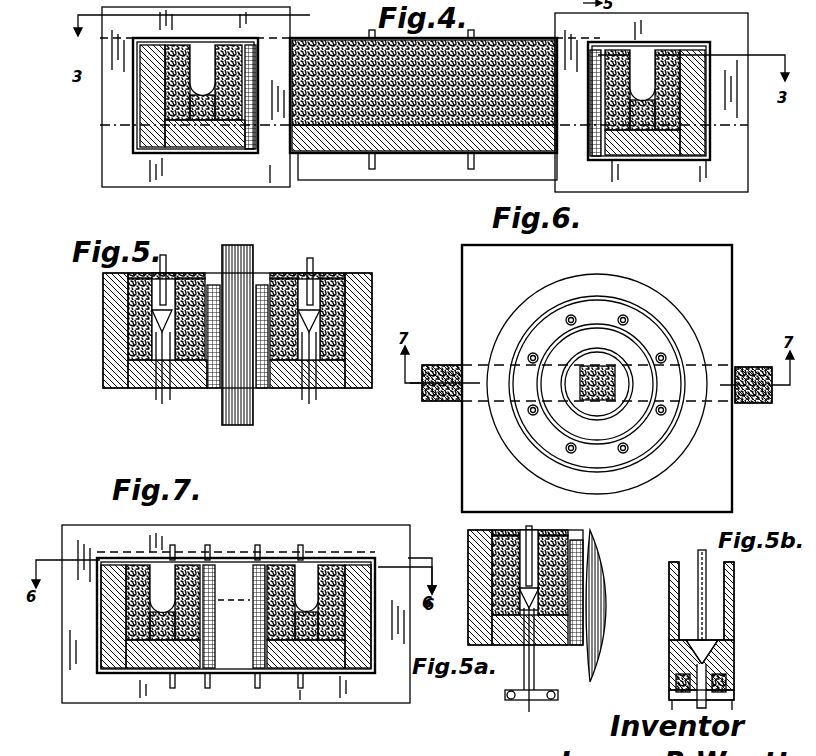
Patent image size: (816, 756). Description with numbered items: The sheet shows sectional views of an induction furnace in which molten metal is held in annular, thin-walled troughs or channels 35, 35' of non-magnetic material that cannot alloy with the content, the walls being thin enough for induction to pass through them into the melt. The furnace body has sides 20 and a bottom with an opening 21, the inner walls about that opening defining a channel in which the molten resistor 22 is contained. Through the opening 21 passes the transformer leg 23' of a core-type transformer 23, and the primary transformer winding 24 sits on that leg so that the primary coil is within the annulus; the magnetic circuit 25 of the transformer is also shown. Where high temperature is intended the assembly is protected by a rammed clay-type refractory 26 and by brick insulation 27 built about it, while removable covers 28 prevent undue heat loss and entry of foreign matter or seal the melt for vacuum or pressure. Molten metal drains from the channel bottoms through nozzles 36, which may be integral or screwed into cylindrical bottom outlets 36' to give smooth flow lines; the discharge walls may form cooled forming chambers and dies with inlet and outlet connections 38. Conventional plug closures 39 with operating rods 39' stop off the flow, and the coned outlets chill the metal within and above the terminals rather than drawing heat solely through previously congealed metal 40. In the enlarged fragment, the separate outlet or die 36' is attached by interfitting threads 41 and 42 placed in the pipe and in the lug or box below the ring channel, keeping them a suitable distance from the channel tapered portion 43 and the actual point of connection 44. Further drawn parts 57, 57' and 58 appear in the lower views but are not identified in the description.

In FIG. 4, the sides 20 is at (215, 75).
In FIG. 5, the sides 20 is at (345, 296).
In FIG. 6, the sides 20 is at (704, 430).
In FIG. 7, the sides 20 is at (100, 560).
In FIG. 5A, the sides 20 is at (525, 587).
In FIG. 5B, the sides 20 is at (736, 582).
In FIG. 4, the opening 21 is at (226, 160).
In FIG. 5, the opening 21 is at (226, 250).
In FIG. 6, the opening 21 is at (598, 360).
In FIG. 7, the opening 21 is at (248, 562).
In FIG. 5A, the opening 21 is at (602, 600).
In FIG. 6, the molten resistor 22 is at (522, 356).
In FIG. 4, the transformer 23 is at (141, 195).
In FIG. 5, the transformer 23 is at (209, 414).
In FIG. 6, the transformer 23 is at (596, 369).
In FIG. 7, the transformer 23 is at (216, 670).
In FIG. 5A, the transformer 23 is at (613, 625).
In FIG. 4, the transformer leg 23' is at (426, 187).
In FIG. 6, the transformer leg 23' is at (541, 447).
In FIG. 4, the primary transformer winding 24 is at (249, 156).
In FIG. 5, the primary transformer winding 24 is at (212, 392).
In FIG. 6, the primary transformer winding 24 is at (586, 370).
In FIG. 7, the primary transformer winding 24 is at (212, 562).
In FIG. 5A, the primary transformer winding 24 is at (580, 560).
In FIG. 4, the magnetic circuit 25 is at (118, 95).
In FIG. 6, the magnetic circuit 25 is at (430, 402).
In FIG. 7, the magnetic circuit 25 is at (66, 616).
In FIG. 5A, the magnetic circuit 25 is at (470, 545).
In FIG. 4, the refractory 26 is at (165, 125).
In FIG. 5, the refractory 26 is at (112, 378).
In FIG. 6, the refractory 26 is at (698, 362).
In FIG. 7, the refractory 26 is at (126, 640).
In FIG. 5A, the refractory 26 is at (494, 590).
In FIG. 4, the insulation 27 is at (163, 156).
In FIG. 5, the insulation 27 is at (118, 394).
In FIG. 6, the insulation 27 is at (722, 480).
In FIG. 7, the insulation 27 is at (110, 672).
In FIG. 5A, the insulation 27 is at (510, 630).
In FIG. 5, the covers 28 is at (358, 276).
In FIG. 7, the covers 28 is at (368, 560).
In FIG. 5A, the covers 28 is at (515, 530).
In FIG. 4, the annular trough 35 is at (420, 100).
In FIG. 5, the annular trough 35' is at (211, 330).
In FIG. 6, the annular trough 35' is at (471, 433).
In FIG. 7, the annular trough 35' is at (235, 634).
In FIG. 5A, the annular trough 35' is at (525, 618).
In FIG. 5B, the annular trough 35' is at (674, 556).
In FIG. 5, the nozzle 36 is at (220, 348).
In FIG. 5A, the nozzle 36 is at (561, 664).
In FIG. 5B, the cylindrical bottom outlet 36' is at (765, 649).
In FIG. 5A, the inlet and outlet connections 38 is at (556, 690).
In FIG. 5B, the inlet and outlet connections 38 is at (670, 704).
In FIG. 5, the plug closure 39 is at (226, 324).
In FIG. 6, the plug closure 39 is at (579, 386).
In FIG. 5A, the plug closure 39 is at (488, 584).
In FIG. 5B, the plug closure 39 is at (728, 640).
In FIG. 4, the operating rod 39' is at (427, 24).
In FIG. 5, the operating rod 39' is at (253, 304).
In FIG. 6, the operating rod 39' is at (604, 393).
In FIG. 7, the operating rod 39' is at (267, 528).
In FIG. 5A, the operating rod 39' is at (481, 566).
In FIG. 5B, the operating rod 39' is at (737, 595).
In FIG. 4, the previously congealed metal 40 is at (370, 166).
In FIG. 5, the previously congealed metal 40 is at (158, 396).
In FIG. 7, the previously congealed metal 40 is at (170, 690).
In FIG. 5A, the previously congealed metal 40 is at (524, 672).
In FIG. 5B, the previously congealed metal 40 is at (730, 660).
In FIG. 5B, the interfitting thread 41 is at (726, 680).
In FIG. 5B, the interfitting thread 42 is at (680, 696).
In FIG. 5B, the channel tapered portion 43 is at (672, 660).
In FIG. 5B, the point of connection 44 is at (676, 690).
In FIG. 5, the rod 57 is at (189, 390).
In FIG. 5A, the rod 57 is at (481, 649).
In FIG. 5B, the rod 57 is at (667, 669).
In FIG. 5A, the bracket 57' is at (522, 717).
In FIG. 5, the plunger rod 58 is at (180, 402).